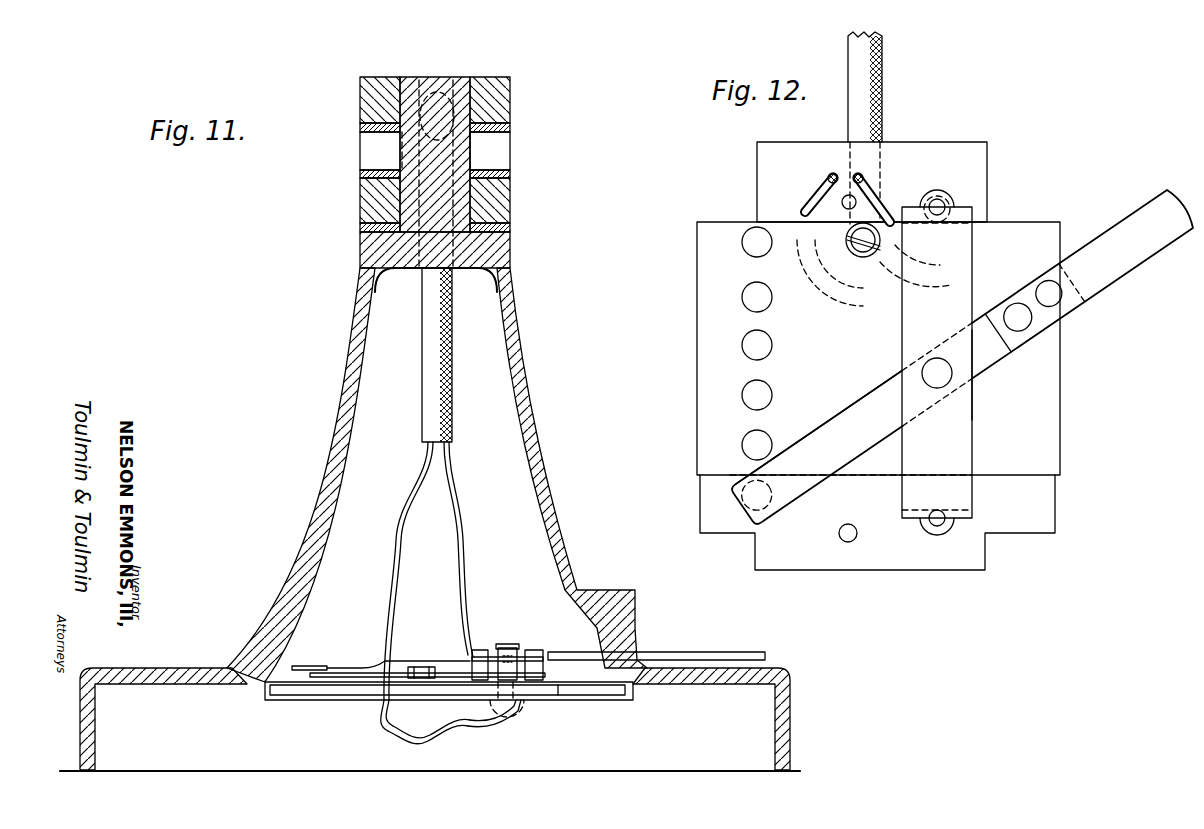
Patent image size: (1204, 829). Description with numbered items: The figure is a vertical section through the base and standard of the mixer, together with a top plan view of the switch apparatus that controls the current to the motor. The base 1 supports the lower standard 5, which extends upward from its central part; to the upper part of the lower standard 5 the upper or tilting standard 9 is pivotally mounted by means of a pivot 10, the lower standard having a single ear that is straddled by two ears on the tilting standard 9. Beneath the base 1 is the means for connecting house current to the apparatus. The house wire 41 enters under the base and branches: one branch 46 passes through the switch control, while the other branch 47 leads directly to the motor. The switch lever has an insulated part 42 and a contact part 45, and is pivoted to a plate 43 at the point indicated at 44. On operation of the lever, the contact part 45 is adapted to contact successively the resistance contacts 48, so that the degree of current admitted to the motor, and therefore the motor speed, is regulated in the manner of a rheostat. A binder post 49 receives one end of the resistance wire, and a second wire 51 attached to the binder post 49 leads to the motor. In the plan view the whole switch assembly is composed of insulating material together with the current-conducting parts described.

In FIG. 11, the base 1 is at (213, 633).
In FIG. 11, the lower standard 5 is at (365, 290).
In FIG. 11, the upper or tilting standard 9 is at (373, 97).
In FIG. 11, the pivot 10 is at (375, 148).
In FIG. 11, the house wire 41 is at (422, 741).
In FIG. 12, the house wire 41 is at (878, 52).
In FIG. 11, the insulated part of the switch lever 42 is at (741, 652).
In FIG. 12, the insulated part of the switch lever 42 is at (1126, 232).
In FIG. 11, the plate 43 is at (537, 652).
In FIG. 12, the plate 43 is at (950, 423).
In FIG. 11, the pivot point of switch lever 44 is at (508, 646).
In FIG. 12, the pivot point of switch lever 44 is at (925, 373).
In FIG. 11, the contact part of the switch lever 45 is at (336, 665).
In FIG. 12, the contact part of the switch lever 45 is at (820, 428).
In FIG. 11, the branch 46 is at (470, 728).
In FIG. 12, the branch 46 is at (938, 290).
In FIG. 11, the branch 47 is at (382, 722).
In FIG. 12, the branch 47 is at (818, 196).
In FIG. 12, the resistance contacts 48 is at (743, 443).
In FIG. 11, the binder post 49 is at (425, 672).
In FIG. 12, the binder post 49 is at (852, 256).
In FIG. 11, the second wire 51 is at (462, 600).
In FIG. 12, the second wire 51 is at (925, 176).